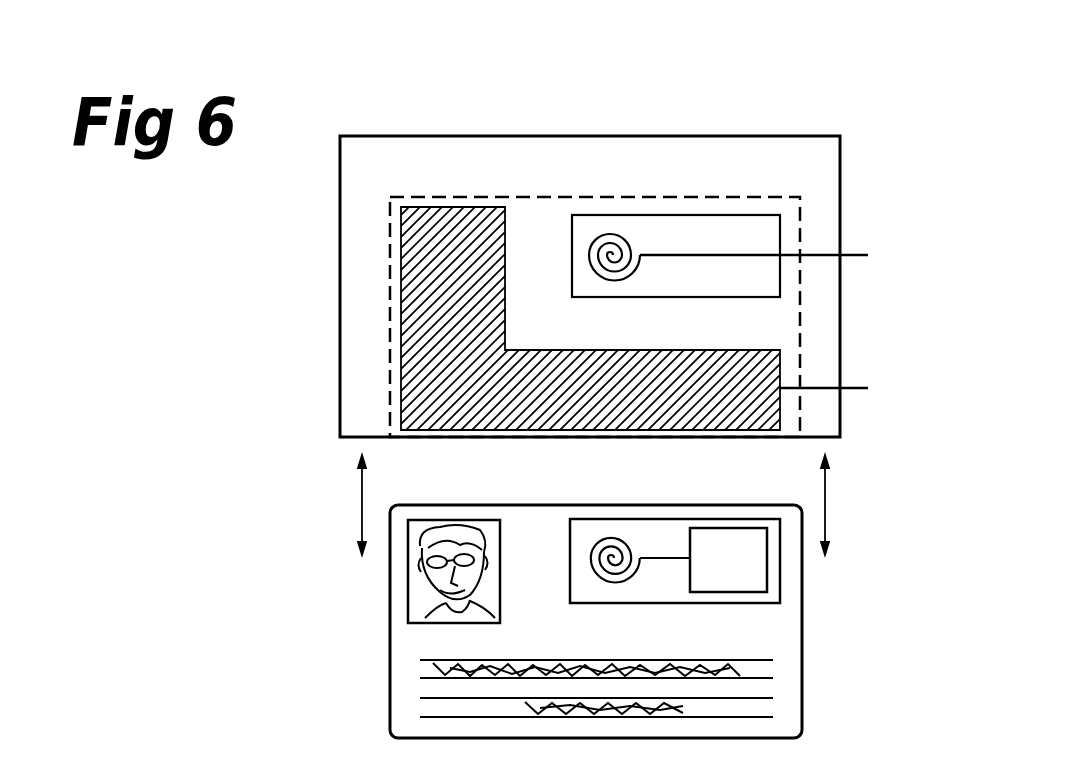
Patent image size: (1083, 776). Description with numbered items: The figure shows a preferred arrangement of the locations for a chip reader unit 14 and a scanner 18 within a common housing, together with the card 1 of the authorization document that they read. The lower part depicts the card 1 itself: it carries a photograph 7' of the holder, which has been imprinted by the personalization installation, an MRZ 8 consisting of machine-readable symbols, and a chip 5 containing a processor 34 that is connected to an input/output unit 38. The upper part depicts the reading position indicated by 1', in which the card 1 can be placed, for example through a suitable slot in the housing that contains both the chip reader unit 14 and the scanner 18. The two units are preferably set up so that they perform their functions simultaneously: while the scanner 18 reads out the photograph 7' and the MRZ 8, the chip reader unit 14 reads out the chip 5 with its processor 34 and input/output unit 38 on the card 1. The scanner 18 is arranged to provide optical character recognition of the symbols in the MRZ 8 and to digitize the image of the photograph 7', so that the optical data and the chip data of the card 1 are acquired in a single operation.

The card 1 is at (641, 621).
The card reading position 1' is at (595, 264).
The chip 5 is at (740, 526).
The photograph of the holder 7' is at (408, 571).
The MRZ 8 is at (433, 666).
The chip reader unit 14 is at (730, 232).
The scanner 18 is at (396, 333).
The processor (CPU) 34 is at (750, 578).
The input/output unit 38 is at (596, 540).